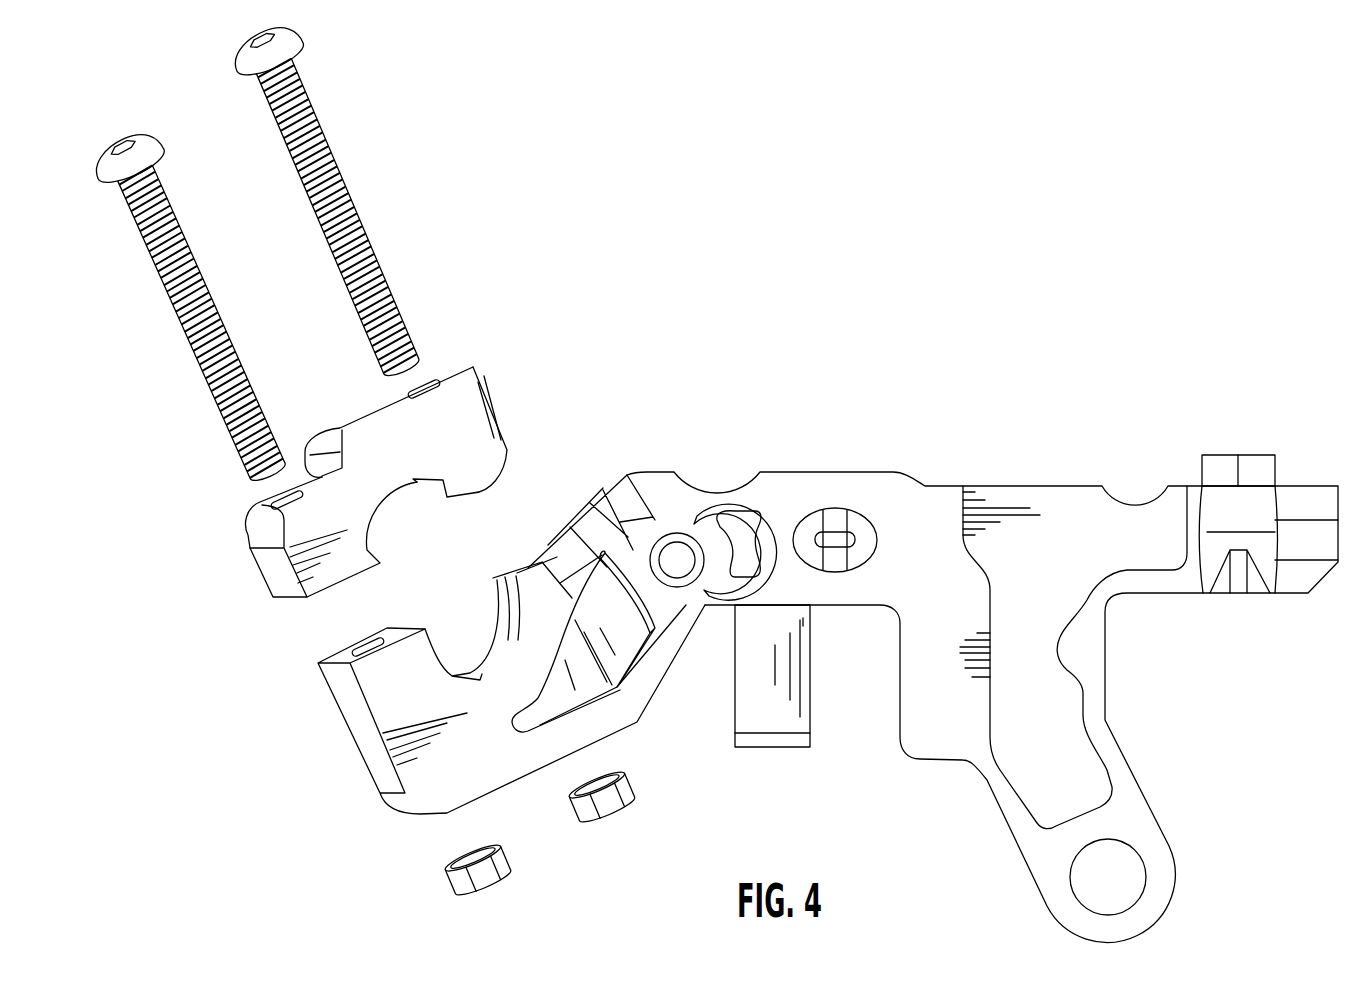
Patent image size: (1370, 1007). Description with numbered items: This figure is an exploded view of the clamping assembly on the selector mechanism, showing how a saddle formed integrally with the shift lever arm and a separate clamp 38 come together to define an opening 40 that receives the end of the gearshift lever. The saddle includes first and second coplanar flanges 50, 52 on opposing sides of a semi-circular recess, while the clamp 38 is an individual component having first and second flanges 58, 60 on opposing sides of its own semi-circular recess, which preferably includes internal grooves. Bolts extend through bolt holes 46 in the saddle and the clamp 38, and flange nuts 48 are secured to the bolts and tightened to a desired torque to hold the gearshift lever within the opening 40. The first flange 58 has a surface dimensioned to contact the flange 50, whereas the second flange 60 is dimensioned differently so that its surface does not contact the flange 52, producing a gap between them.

The clamp 38 is at (382, 456).
The opening 40 is at (453, 587).
The bolt holes 46 is at (433, 383).
The flange nuts 48 is at (493, 860).
The first coplanar flange 50 is at (511, 682).
The second coplanar flange 52 is at (565, 610).
The first flange 58 is at (483, 446).
The second flange 60 is at (347, 571).